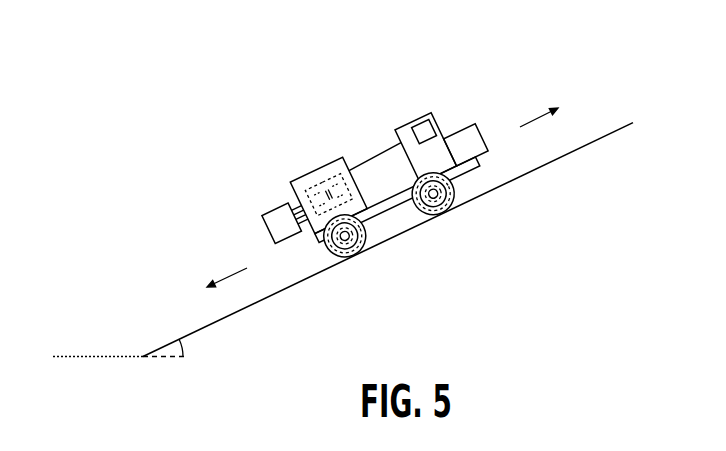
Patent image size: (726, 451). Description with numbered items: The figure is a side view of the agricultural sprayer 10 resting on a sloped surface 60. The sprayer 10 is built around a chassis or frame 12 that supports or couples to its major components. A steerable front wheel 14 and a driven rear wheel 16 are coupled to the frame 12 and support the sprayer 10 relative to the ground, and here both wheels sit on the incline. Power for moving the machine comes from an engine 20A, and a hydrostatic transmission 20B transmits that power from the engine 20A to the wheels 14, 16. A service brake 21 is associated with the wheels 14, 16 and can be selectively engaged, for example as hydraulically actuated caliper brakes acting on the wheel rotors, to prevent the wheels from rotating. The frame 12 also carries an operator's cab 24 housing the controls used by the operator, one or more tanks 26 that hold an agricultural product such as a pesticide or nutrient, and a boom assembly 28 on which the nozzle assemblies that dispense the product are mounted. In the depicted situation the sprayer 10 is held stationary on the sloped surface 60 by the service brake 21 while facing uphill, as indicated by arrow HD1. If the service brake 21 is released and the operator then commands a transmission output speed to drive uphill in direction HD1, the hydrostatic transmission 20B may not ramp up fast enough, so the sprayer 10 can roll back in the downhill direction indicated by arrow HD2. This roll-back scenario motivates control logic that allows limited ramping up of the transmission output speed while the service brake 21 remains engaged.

The agricultural sprayer 10 is at (455, 80).
The chassis or frame 12 is at (478, 170).
The steerable front wheels 14 is at (453, 200).
The driven rear wheels 16 is at (360, 252).
The service brake 21 is at (407, 248).
The engine 20A is at (332, 176).
The hydrostatic transmission 20B is at (312, 192).
The operator's cab 24 is at (408, 124).
The tank 26 is at (377, 152).
The boom assembly 28 is at (275, 208).
The sloped surface 60 is at (545, 163).
The uphill direction HD1 is at (537, 117).
The downhill direction HD2 is at (233, 270).